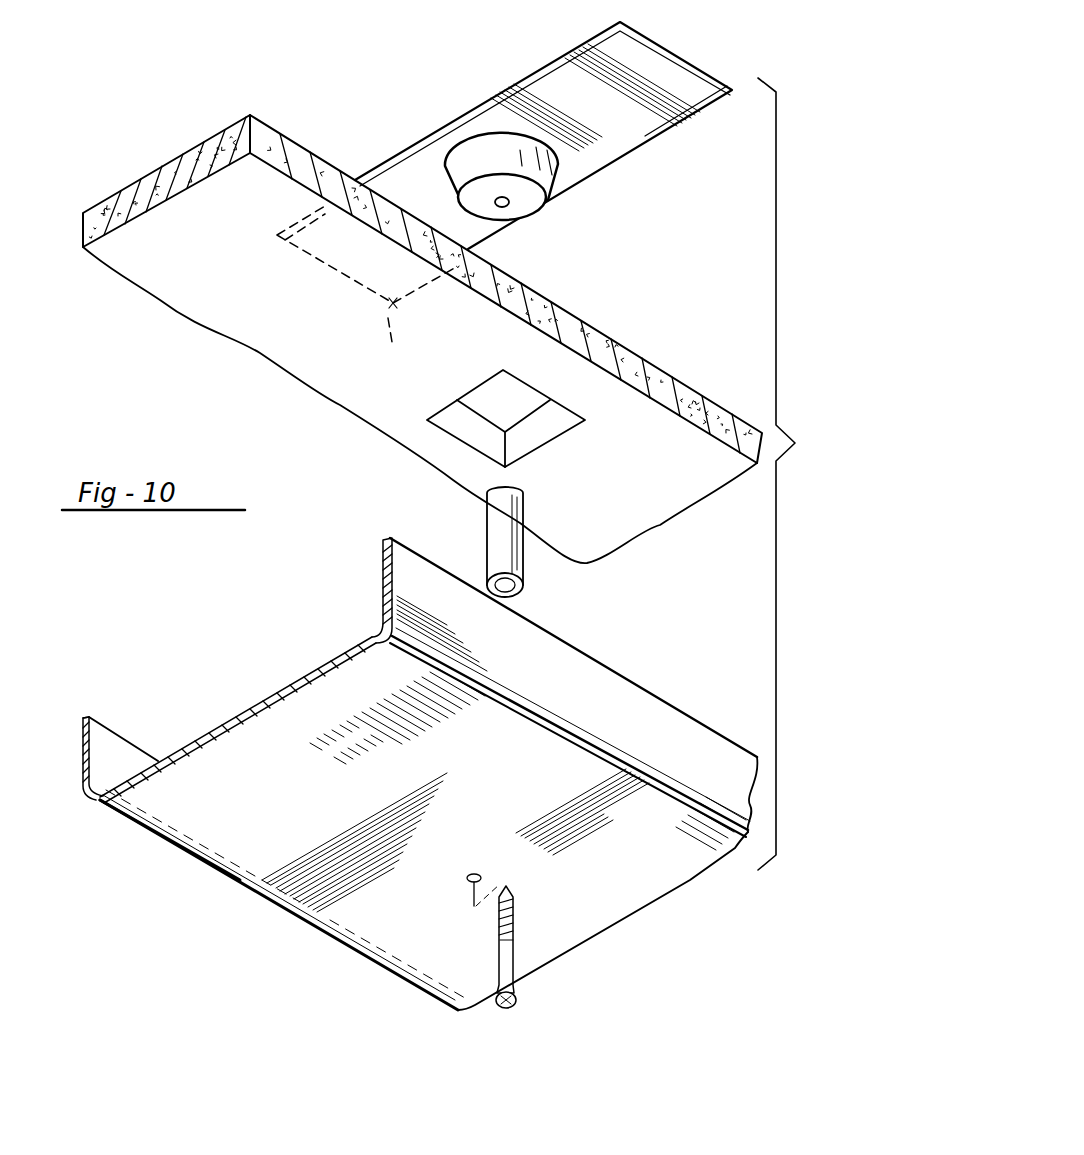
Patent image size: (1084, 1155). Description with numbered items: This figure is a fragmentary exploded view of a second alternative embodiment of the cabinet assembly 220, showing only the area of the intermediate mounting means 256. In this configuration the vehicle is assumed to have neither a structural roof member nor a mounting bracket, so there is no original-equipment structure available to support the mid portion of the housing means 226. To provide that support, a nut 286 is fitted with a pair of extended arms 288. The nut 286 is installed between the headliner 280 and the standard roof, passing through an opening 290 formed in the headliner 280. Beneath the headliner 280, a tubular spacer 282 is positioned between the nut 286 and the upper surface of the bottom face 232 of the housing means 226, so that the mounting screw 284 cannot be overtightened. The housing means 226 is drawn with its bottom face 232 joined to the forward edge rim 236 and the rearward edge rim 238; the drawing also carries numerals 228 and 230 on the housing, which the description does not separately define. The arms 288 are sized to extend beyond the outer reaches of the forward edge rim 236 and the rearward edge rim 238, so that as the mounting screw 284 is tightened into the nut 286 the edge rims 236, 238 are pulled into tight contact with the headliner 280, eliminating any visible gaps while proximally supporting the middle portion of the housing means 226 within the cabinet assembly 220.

The cabinet assembly 220 is at (798, 441).
The headliner 280 is at (680, 480).
The extended arms 288 is at (640, 136).
The nut 286 is at (532, 207).
The opening 290 is at (547, 427).
The tubular spacer 282 is at (493, 543).
The forward edge rim 236 is at (573, 647).
The base plate of channel bracket 228 is at (630, 723).
The bottom face 232 is at (255, 853).
The side flange 230 is at (82, 738).
The rearward edge rim 238 is at (87, 717).
The housing means 226 is at (116, 813).
The mounting screw 284 is at (497, 968).
The intermediate mounting means 256 is at (513, 946).